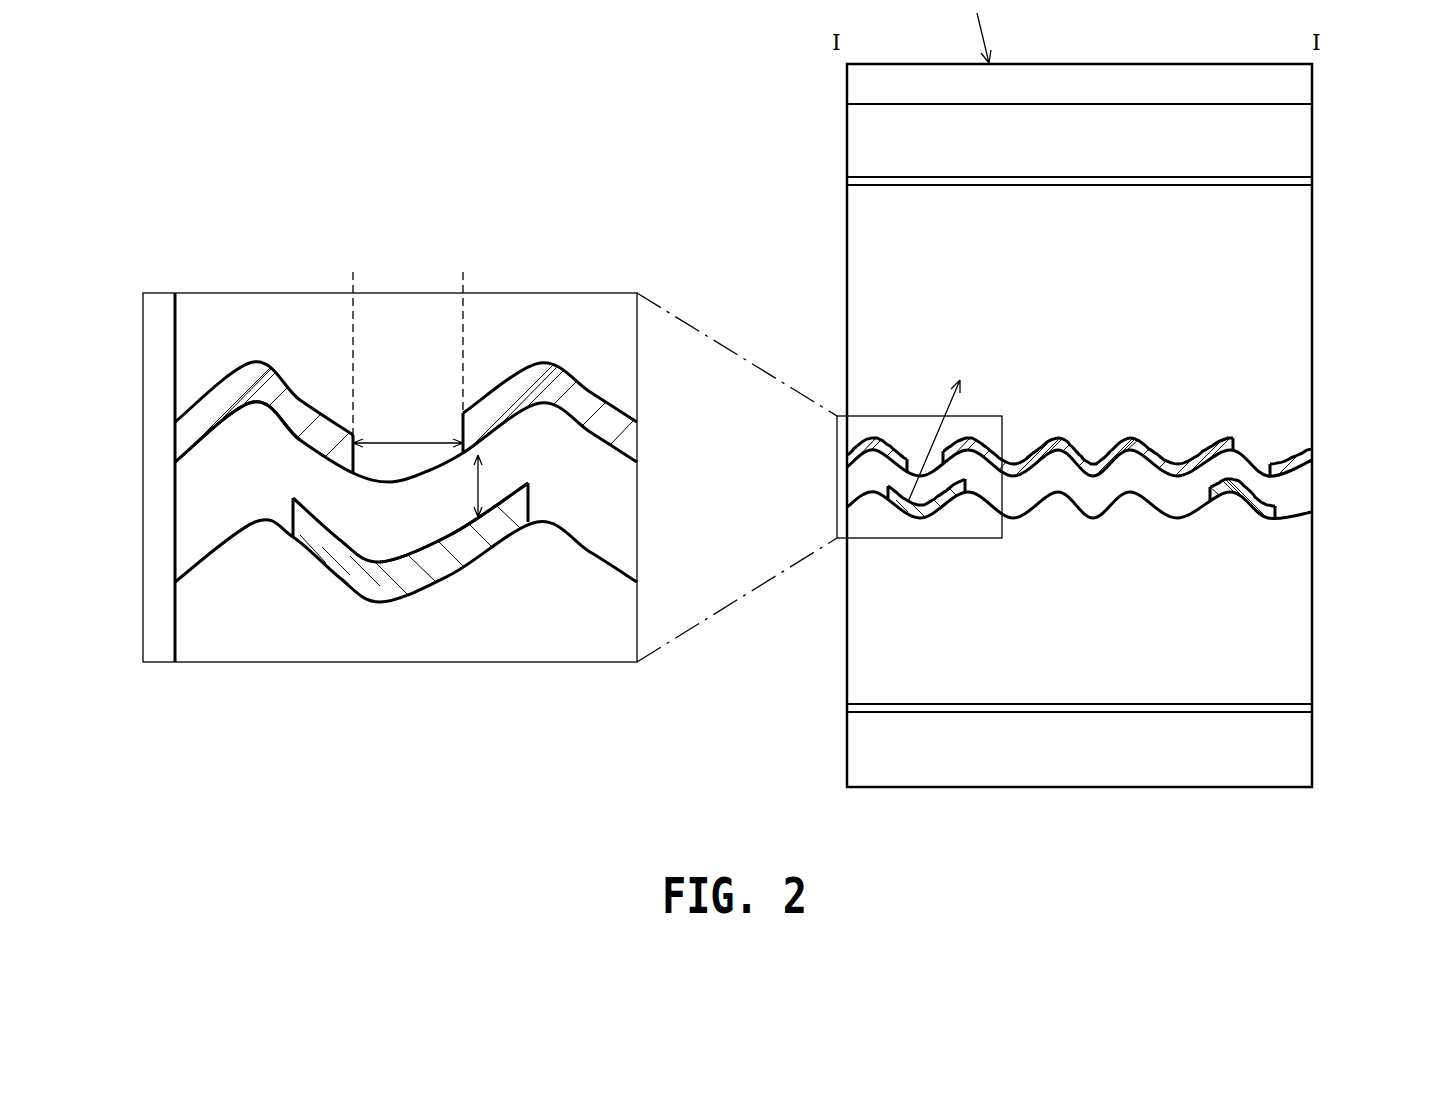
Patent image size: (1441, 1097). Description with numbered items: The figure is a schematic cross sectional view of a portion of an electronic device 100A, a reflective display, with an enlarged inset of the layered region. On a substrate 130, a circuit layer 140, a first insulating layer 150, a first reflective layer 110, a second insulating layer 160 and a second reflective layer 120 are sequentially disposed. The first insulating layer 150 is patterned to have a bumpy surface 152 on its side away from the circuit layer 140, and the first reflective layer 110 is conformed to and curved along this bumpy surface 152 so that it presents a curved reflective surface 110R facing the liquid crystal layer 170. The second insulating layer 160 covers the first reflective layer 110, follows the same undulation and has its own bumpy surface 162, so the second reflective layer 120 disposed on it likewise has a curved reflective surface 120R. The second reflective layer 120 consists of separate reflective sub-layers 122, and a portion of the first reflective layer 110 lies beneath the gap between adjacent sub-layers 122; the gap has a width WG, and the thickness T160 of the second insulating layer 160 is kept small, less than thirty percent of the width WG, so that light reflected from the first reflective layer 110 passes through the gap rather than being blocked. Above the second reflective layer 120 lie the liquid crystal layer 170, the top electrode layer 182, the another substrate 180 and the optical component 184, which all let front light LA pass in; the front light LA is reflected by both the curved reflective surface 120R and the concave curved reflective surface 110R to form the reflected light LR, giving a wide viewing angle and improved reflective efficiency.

The electronic device 100A is at (1422, 862).
The first reflective layer 110 is at (362, 585).
The curved reflective surface 110R is at (419, 551).
The second reflective layer 120 is at (463, 272).
The curved reflective surface 120R is at (592, 377).
The reflective sub-layers 122 is at (266, 377).
The substrate 130 is at (1303, 750).
The circuit layer 140 is at (1303, 708).
The first insulating layer 150 is at (193, 640).
The bumpy surface 152 is at (243, 537).
The second insulating layer 160 is at (193, 525).
The bumpy surface 162 is at (245, 417).
The liquid crystal layer 170 is at (193, 322).
The another substrate 180 is at (1303, 142).
The top electrode layer 182 is at (1303, 182).
The optical component 184 is at (1303, 83).
The width of the gap WG is at (408, 427).
The thickness of the second insulating layer T160 is at (453, 486).
The front light LA is at (983, 22).
The reflected light LR is at (938, 425).